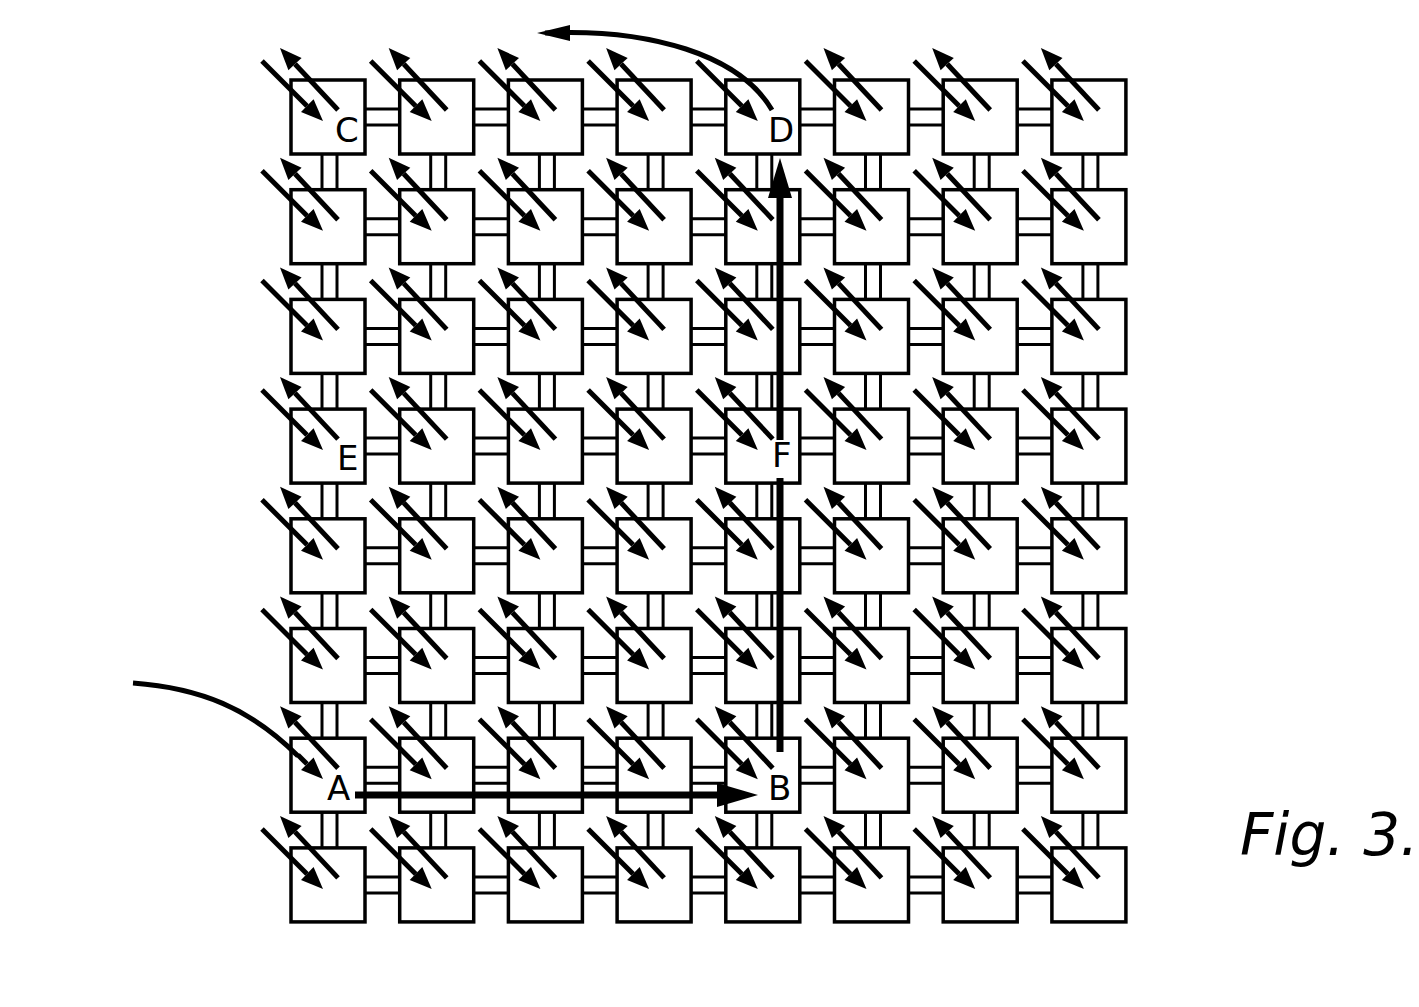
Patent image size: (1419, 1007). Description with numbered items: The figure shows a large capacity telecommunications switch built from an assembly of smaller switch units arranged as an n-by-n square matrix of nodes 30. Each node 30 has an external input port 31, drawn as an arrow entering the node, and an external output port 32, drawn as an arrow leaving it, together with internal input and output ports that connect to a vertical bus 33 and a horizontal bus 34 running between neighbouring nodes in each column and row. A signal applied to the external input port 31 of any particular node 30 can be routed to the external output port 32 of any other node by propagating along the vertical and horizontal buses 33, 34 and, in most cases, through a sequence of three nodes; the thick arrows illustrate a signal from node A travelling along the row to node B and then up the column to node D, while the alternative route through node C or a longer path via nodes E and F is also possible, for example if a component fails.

The node 30 is at (870, 250).
The external input port 31 is at (267, 68).
The external output port 32 is at (303, 60).
The vertical bus 33 is at (870, 493).
The horizontal bus 34 is at (1030, 883).